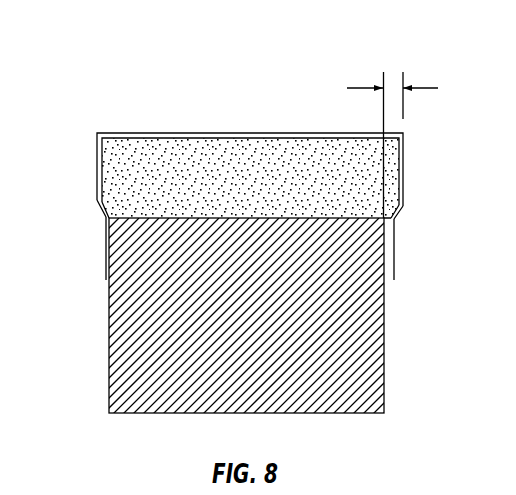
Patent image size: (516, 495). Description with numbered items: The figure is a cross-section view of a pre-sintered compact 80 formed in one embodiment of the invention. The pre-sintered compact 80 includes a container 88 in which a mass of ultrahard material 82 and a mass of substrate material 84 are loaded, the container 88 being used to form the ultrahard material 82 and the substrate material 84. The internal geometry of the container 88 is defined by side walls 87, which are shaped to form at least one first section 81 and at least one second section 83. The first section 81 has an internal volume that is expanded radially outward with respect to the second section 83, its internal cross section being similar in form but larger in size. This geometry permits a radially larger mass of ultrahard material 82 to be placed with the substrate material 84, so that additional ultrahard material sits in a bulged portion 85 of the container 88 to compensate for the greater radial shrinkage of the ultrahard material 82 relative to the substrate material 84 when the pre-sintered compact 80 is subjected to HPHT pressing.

The pre-sintered compact 80 is at (141, 64).
The first section 81 is at (403, 177).
The ultrahard material 82 is at (250, 178).
The second section 83 is at (393, 257).
The substrate material 84 is at (258, 356).
The bulged portion 85 is at (397, 68).
The side walls 87 is at (96, 201).
The container 88 is at (96, 155).